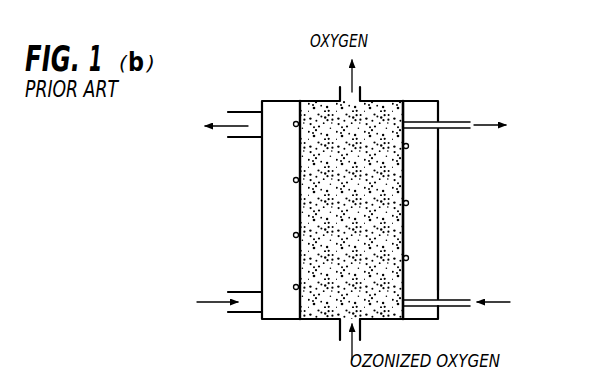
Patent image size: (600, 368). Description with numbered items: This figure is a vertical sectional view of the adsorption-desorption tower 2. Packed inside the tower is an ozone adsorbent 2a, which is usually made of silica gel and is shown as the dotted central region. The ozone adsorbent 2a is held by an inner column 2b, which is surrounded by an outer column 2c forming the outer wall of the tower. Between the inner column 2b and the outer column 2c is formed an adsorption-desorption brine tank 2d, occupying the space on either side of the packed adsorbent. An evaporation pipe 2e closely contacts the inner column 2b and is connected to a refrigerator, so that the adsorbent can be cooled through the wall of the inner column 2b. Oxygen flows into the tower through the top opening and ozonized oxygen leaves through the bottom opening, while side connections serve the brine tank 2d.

The adsorption-desorption tower 2 is at (313, 98).
The ozone adsorbent 2a is at (372, 138).
The inner column 2b is at (404, 178).
The outer column 2c is at (440, 218).
The adsorption-desorption brine tank 2d is at (420, 271).
The evaporation pipe 2e is at (293, 235).